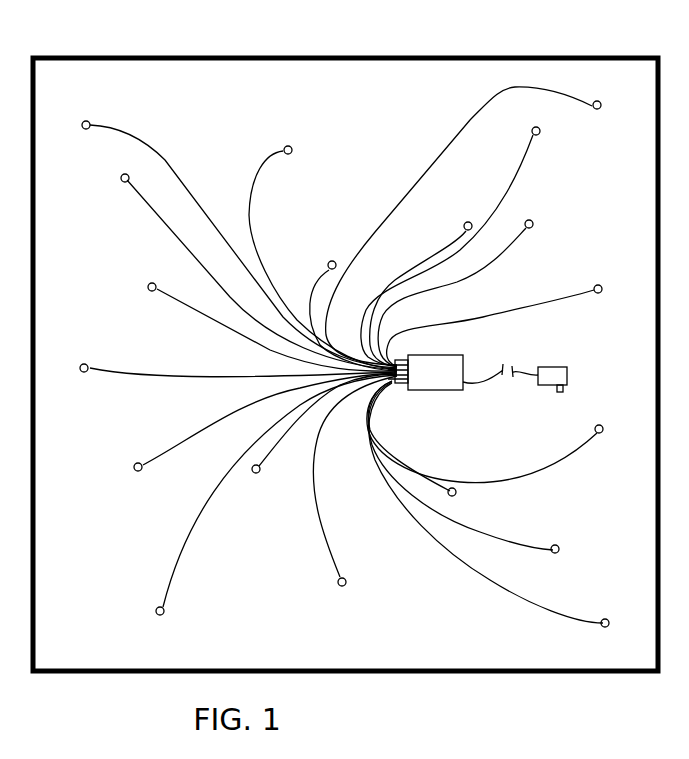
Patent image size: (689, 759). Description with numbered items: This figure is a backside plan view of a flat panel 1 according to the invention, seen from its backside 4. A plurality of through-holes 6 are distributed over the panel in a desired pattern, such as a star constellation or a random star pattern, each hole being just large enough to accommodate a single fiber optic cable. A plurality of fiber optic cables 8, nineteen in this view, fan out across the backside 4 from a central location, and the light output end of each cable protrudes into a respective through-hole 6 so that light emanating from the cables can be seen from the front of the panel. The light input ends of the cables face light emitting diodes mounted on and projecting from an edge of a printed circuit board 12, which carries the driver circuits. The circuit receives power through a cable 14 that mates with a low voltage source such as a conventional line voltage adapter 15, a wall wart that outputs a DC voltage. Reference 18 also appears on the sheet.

The flat panel 1 is at (259, 55).
The backside 4 is at (348, 99).
The through-holes 6 is at (92, 120).
The fiber optic cables 8 is at (173, 167).
The printed circuit board 12 is at (425, 391).
The cable 14 is at (488, 388).
The line voltage adapter 15 is at (560, 366).
The label 18 is at (403, 5).